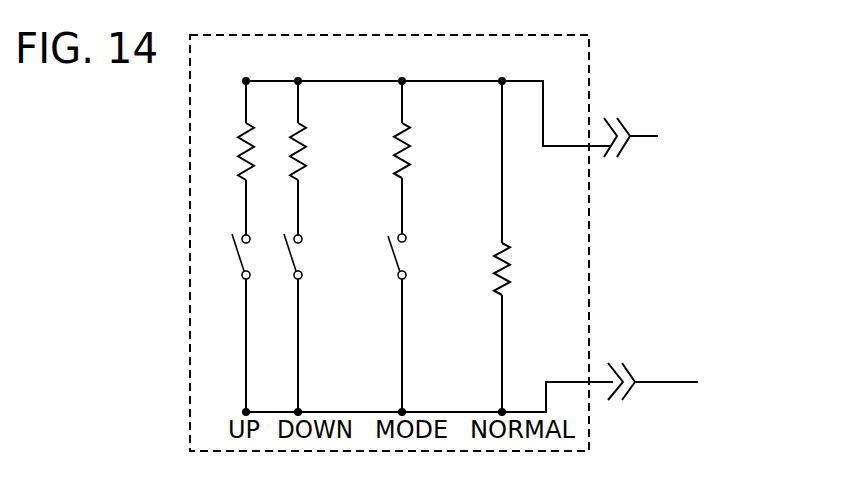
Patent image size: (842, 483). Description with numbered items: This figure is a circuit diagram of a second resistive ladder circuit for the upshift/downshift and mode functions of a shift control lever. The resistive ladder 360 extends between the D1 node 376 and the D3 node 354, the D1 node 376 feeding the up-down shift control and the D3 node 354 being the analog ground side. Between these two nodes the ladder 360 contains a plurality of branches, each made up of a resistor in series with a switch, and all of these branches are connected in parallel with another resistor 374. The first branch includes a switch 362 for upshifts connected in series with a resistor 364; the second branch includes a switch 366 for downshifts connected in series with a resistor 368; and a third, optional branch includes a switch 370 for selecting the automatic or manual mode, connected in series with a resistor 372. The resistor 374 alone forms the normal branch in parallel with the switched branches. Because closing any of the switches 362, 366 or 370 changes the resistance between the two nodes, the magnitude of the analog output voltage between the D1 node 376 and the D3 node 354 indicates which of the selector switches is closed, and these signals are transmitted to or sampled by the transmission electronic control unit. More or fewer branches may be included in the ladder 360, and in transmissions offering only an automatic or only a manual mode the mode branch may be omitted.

The resistive ladder 360 is at (695, 46).
The switch for upshifts 362 is at (238, 254).
The resistor 364 is at (238, 141).
The switch for downshifts 366 is at (290, 256).
The resistor 368 is at (290, 146).
The mode switch 370 is at (394, 258).
The resistor 372 is at (394, 143).
The resistor 374 is at (497, 262).
The D1 node 376 is at (641, 136).
The D3 node 354 is at (663, 382).